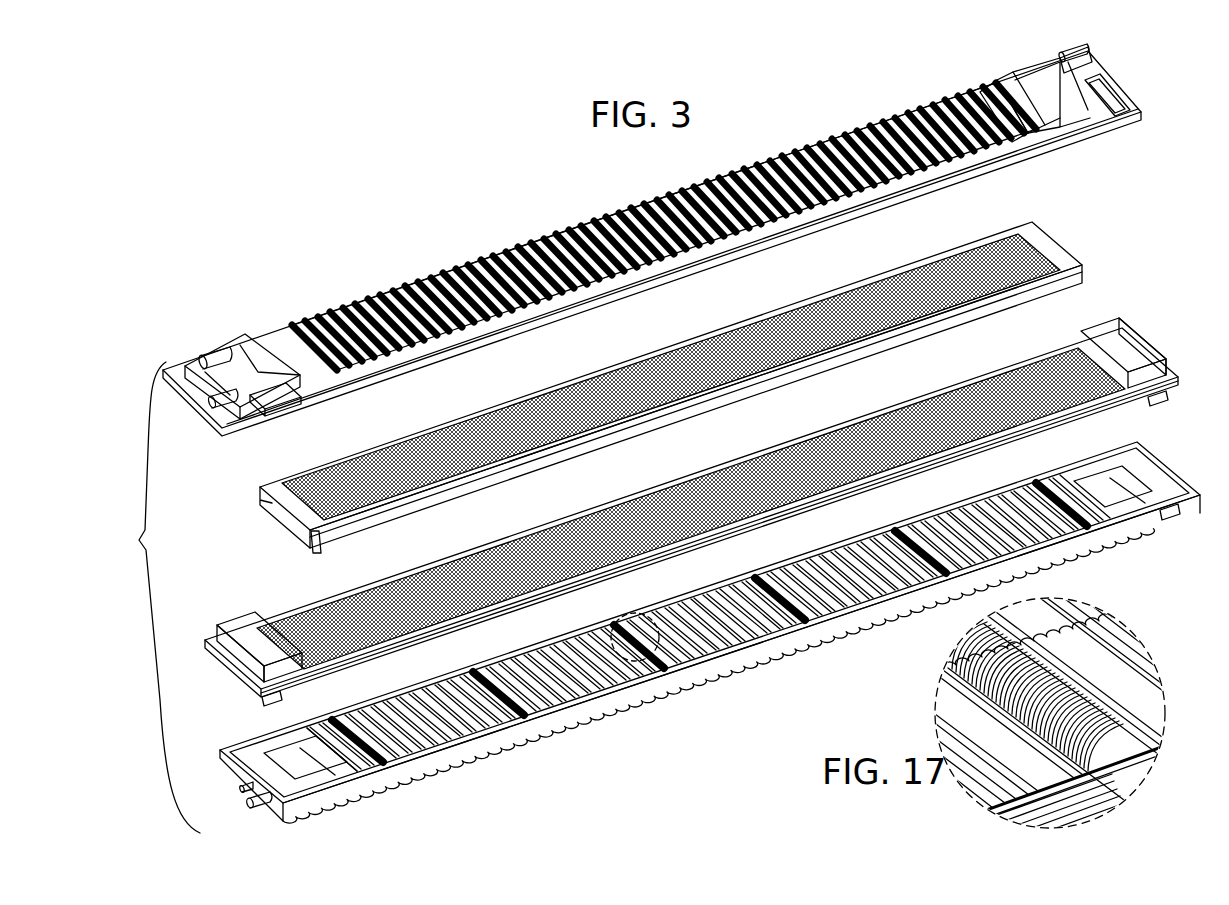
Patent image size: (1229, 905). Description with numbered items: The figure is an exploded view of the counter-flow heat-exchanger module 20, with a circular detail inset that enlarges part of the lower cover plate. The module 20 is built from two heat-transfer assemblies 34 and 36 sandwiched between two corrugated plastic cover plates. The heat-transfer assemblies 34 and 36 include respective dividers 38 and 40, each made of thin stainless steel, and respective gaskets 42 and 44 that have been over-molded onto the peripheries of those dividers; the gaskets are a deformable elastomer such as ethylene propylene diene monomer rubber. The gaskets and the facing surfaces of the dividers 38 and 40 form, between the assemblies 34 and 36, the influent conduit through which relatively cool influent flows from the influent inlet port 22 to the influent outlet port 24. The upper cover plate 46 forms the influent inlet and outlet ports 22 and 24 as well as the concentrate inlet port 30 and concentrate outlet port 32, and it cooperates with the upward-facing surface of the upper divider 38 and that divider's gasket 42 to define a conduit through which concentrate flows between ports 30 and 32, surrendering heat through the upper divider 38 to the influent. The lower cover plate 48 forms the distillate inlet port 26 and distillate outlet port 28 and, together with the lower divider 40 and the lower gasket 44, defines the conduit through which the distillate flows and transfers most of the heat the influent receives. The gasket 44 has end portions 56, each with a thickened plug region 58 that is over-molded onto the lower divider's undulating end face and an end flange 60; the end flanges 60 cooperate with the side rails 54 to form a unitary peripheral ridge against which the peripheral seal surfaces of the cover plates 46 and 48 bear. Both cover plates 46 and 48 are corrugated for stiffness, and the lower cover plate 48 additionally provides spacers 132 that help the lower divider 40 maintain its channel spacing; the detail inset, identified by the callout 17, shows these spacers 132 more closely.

In FIG. 3, the counter-flow heat-exchanger module 20 is at (355, 160).
In FIG. 3, the influent inlet port 22 is at (207, 353).
In FIG. 3, the influent outlet port 24 is at (1078, 52).
In FIG. 3, the distillate inlet port 26 is at (1169, 519).
In FIG. 3, the distillate outlet port 28 is at (256, 812).
In FIG. 3, the concentrate inlet port 30 is at (1003, 73).
In FIG. 3, the concentrate outlet port 32 is at (268, 398).
In FIG. 3, the heat-transfer assembly 34 is at (694, 388).
In FIG. 3, the heat-transfer assembly 36 is at (710, 514).
In FIG. 3, the upper divider 38 is at (760, 309).
In FIG. 3, the lower divider 40 is at (760, 453).
In FIG. 3, the gasket 42 is at (320, 541).
In FIG. 3, the gasket 44 is at (272, 699).
In FIG. 3, the upper cover plate 46 is at (661, 240).
In FIG. 3, the lower cover plate 48 is at (705, 640).
In FIG. 3, the side rail 54 is at (935, 448).
In FIG. 3, the end portion 56 is at (265, 605).
In FIG. 3, the plug region 58 is at (246, 624).
In FIG. 3, the end flange 60 is at (224, 641).
In FIG. 3, the spacer 132 is at (386, 774).
In FIG. 17, the spacer 132 is at (995, 648).
In FIG. 3, the detail region of FIG. 17 is at (655, 657).